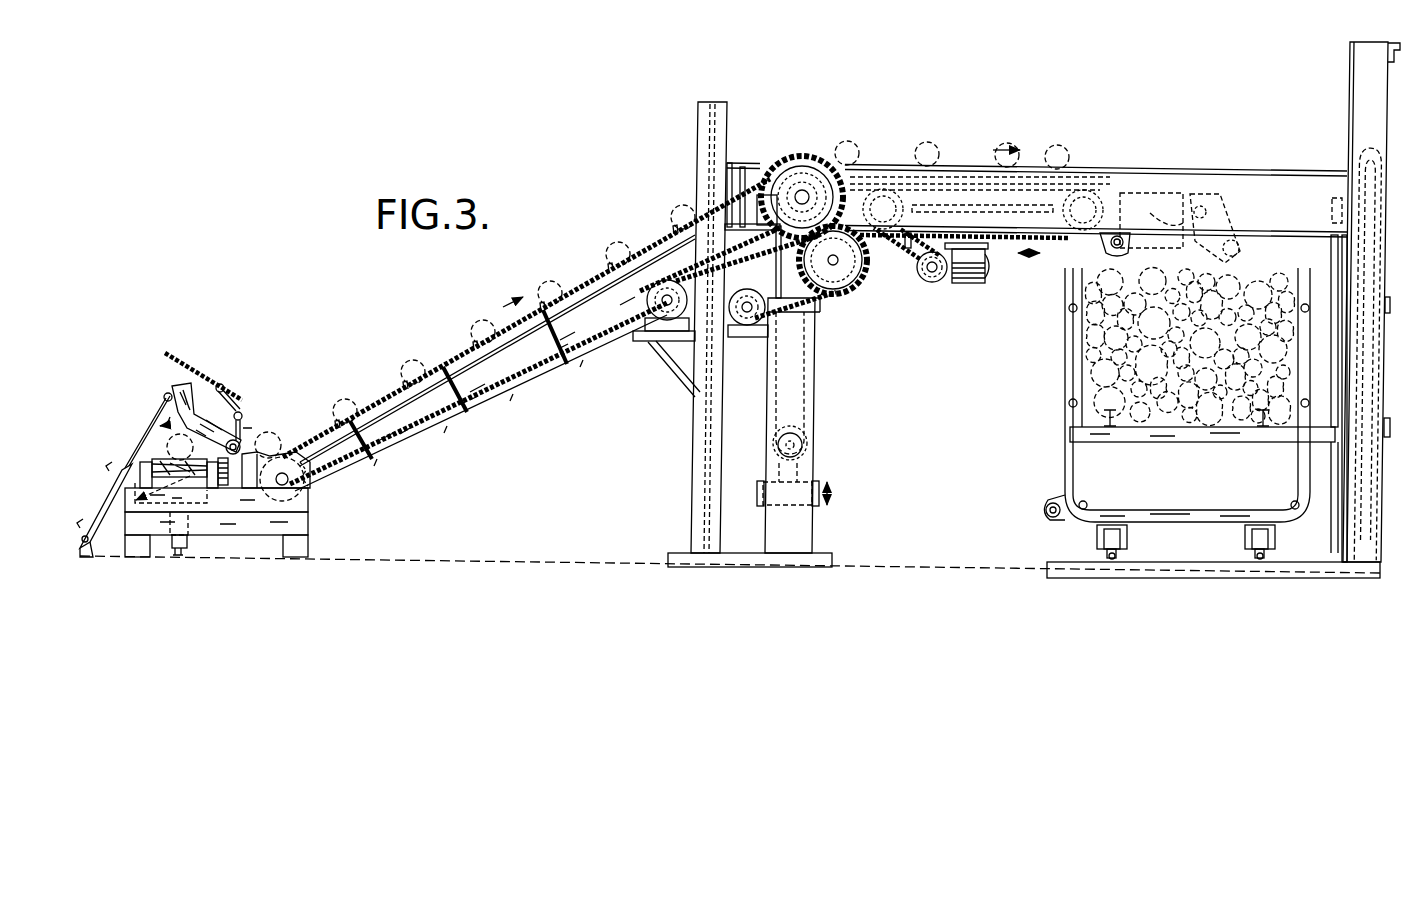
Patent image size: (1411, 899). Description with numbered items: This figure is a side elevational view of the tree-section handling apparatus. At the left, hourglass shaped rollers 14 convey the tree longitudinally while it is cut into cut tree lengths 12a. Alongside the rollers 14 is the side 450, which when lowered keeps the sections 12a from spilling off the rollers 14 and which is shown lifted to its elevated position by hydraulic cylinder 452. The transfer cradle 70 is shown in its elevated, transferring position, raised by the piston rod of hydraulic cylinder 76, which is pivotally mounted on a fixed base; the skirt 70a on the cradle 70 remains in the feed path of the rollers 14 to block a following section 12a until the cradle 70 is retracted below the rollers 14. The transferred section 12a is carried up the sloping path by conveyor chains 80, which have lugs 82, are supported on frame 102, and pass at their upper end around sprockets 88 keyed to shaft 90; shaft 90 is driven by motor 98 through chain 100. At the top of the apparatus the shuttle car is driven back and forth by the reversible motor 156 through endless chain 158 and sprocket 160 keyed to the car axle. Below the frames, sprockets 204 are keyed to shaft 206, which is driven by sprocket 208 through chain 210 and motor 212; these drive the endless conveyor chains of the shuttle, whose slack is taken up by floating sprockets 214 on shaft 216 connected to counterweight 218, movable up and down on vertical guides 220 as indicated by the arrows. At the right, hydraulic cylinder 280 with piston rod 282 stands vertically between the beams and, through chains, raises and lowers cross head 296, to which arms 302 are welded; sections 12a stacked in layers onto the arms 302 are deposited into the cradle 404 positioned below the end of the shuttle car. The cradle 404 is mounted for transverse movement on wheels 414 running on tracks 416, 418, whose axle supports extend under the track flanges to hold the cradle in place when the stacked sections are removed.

The cut tree lengths 12a is at (193, 413).
The hourglass shaped rollers 14 is at (158, 461).
The transfer cradle 70 is at (176, 388).
The skirt 70a is at (173, 433).
The hydraulic cylinder 76 is at (112, 493).
The conveyor chains 80 is at (452, 362).
The lugs 82 is at (607, 270).
The sprockets 88 is at (818, 160).
The shaft 90 is at (801, 190).
The motor 98 is at (665, 319).
The chain 100 is at (675, 250).
The frame 102 is at (376, 407).
The motor 156 is at (973, 281).
The endless chain 158 is at (896, 250).
The sprocket 160 is at (920, 269).
The sprockets 204 is at (858, 294).
The shaft 206 is at (833, 266).
The sprocket 208 is at (866, 286).
The chain 210 is at (790, 313).
The motor 212 is at (748, 326).
The floating sprockets 214 is at (780, 432).
The shaft 216 is at (803, 440).
The counterweight 218 is at (760, 493).
The vertical guides 220 is at (805, 528).
The hydraulic cylinder 280 is at (1357, 525).
The piston rod 282 is at (1335, 213).
The cross head 296 is at (1333, 418).
The arms 302 is at (1183, 434).
The cradle 404 is at (1060, 455).
The wheels 414 is at (1110, 530).
The track 416 is at (1260, 560).
The track 418 is at (1113, 560).
The side 450 is at (176, 358).
The hydraulic cylinder 452 is at (243, 436).